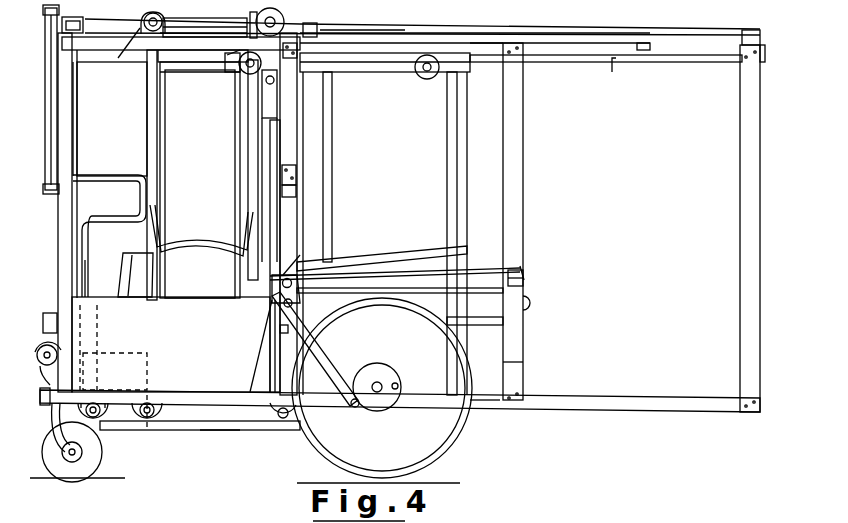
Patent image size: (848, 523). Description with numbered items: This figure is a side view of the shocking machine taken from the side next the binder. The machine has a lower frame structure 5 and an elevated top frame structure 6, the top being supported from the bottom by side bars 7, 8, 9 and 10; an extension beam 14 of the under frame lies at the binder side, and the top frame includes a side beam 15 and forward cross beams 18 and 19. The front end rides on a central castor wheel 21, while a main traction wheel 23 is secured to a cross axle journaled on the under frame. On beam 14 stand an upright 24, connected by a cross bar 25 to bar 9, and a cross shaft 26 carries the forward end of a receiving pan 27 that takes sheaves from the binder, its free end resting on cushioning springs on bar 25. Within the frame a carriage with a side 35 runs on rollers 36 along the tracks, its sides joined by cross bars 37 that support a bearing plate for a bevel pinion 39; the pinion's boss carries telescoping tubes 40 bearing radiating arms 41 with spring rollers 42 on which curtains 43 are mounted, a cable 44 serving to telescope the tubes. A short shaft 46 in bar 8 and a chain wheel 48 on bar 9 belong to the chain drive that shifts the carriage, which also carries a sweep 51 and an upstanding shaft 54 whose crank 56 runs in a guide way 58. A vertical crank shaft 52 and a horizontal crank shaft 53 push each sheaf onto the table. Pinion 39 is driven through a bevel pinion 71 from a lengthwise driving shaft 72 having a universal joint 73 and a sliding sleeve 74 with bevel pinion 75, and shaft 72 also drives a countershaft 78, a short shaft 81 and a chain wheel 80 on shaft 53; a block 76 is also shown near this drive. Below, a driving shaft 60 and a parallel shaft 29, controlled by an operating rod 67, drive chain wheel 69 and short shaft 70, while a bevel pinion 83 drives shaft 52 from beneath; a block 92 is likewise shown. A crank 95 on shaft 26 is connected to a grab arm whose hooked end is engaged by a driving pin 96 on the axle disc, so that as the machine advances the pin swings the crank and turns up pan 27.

The lower frame structure 5 is at (630, 402).
The top frame structure 6 is at (677, 58).
The side bar 7 is at (72, 103).
The side bar 8 is at (290, 112).
The side bar 9 is at (524, 113).
The side bar 10 is at (742, 127).
The extension beam 14 is at (484, 402).
The side beam 15 is at (612, 58).
The cross beam 18 is at (173, 33).
The cross beam 19 is at (57, 36).
The castor wheel 21 is at (82, 467).
The traction wheel 23 is at (437, 433).
The upright 24 is at (270, 373).
The cross bar 25 is at (525, 287).
The cross shaft 26 is at (290, 278).
The receiving pan 27 is at (402, 270).
The shaft 29 is at (96, 402).
The carriage side 35 is at (466, 182).
The rollers 36 is at (424, 79).
The cross bar 37 is at (310, 57).
The bevel pinion 39 is at (277, 18).
The telescoping tubes 40 is at (266, 138).
The radiating arms 41 is at (198, 70).
The spring rollers 42 is at (168, 74).
The curtains 43 is at (163, 133).
The cable 44 is at (181, 43).
The short shaft 46 is at (320, 267).
The chain wheel 48 is at (530, 306).
The sweep 51 is at (124, 270).
The crank shaft 52 is at (147, 114).
The crank shaft 53 is at (120, 181).
The shaft 54 is at (331, 181).
The crank 56 is at (391, 34).
The guide way 58 is at (570, 44).
The driving shaft 60 is at (42, 366).
The operating rod 67 is at (44, 332).
The chain wheel 69 is at (106, 421).
The short shaft 70 is at (290, 413).
The bevel pinion 71 is at (290, 58).
The driving shaft 72 is at (500, 32).
The universal joint 73 is at (203, 56).
The driving sleeve 74 is at (249, 52).
The bevel pinion 75 is at (250, 20).
The block 76 is at (319, 37).
The countershaft 78 is at (145, 17).
The chain wheel 80 is at (43, 189).
The short shaft 81 is at (97, 20).
The bevel pinion 83 is at (167, 387).
The block 92 is at (280, 329).
The crank 95 is at (272, 285).
The driving pin 96 is at (398, 384).